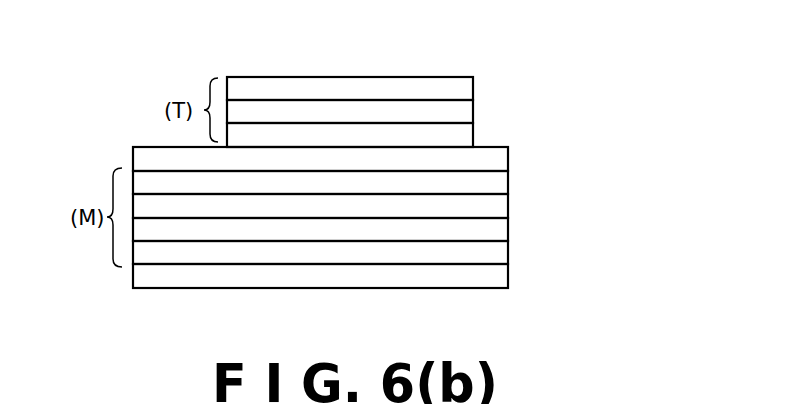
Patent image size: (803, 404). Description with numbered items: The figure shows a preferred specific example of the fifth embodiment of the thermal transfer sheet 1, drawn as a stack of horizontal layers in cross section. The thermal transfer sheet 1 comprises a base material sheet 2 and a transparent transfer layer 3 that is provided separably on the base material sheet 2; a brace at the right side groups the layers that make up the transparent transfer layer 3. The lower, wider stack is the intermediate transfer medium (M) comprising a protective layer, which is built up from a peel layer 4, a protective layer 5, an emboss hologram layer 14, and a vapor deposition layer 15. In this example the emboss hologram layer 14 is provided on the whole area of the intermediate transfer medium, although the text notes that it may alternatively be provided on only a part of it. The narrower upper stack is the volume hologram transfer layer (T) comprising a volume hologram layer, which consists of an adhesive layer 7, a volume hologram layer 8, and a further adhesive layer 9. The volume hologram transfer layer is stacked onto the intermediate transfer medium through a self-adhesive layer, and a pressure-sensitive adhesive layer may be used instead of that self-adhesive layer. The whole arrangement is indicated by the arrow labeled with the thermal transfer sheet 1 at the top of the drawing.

The thermal transfer sheet 1 is at (356, 49).
The base material sheet 2 is at (497, 275).
The transparent transfer layer 3 is at (404, 190).
The peel layer 4 is at (497, 248).
The protective layer 5 is at (497, 225).
The emboss hologram layer 14 is at (492, 208).
The vapor deposition layer 15 is at (492, 184).
The adhesive layer 7 is at (460, 132).
The volume hologram layer 8 is at (458, 110).
The adhesive layer 9 is at (455, 84).